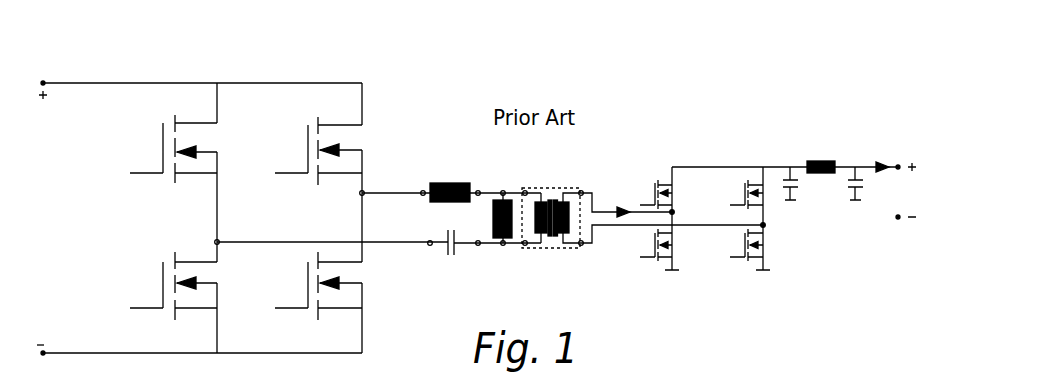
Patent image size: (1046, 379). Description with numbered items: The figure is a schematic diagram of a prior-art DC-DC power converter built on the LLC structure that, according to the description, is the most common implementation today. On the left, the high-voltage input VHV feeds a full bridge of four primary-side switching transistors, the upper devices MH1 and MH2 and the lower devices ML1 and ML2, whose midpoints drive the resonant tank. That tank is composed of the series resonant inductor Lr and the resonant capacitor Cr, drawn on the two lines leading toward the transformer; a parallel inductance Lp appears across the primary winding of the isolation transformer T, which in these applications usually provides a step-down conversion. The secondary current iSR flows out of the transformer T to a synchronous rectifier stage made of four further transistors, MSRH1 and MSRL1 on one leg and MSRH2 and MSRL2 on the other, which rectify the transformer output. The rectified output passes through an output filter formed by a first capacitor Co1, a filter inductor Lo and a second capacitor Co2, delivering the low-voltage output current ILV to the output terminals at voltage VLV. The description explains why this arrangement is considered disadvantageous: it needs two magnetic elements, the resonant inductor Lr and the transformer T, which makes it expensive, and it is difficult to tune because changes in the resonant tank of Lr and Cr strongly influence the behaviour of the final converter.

The high-voltage input source V_HV VHV is at (42, 218).
The high-side primary MOSFET M_H1 MH1 is at (164, 149).
The low-side primary MOSFET M_L1 ML1 is at (164, 286).
The high-side primary MOSFET M_H2 MH2 is at (307, 151).
The low-side primary MOSFET M_L2 ML2 is at (307, 286).
The resonant inductor Lr is at (450, 179).
The resonant capacitor Cr is at (484, 234).
The magnetizing inductance L_p Lp is at (493, 218).
The isolation transformer T is at (642, 218).
The secondary current i_SR iSR is at (616, 200).
The synchronous rectifier MOSFET M_SRH1 MSRH1 is at (642, 193).
The synchronous rectifier MOSFET M_SRL1 MSRL1 is at (642, 244).
The synchronous rectifier MOSFET M_SRH2 MSRH2 is at (727, 193).
The synchronous rectifier MOSFET M_SRL2 MSRL2 is at (727, 244).
The output filter capacitor Co1 is at (790, 183).
The output filter inductor Lo is at (852, 167).
The output filter capacitor Co2 is at (855, 183).
The low-voltage output current I_LV ILV is at (870, 148).
The low-voltage output V_LV VLV is at (909, 191).